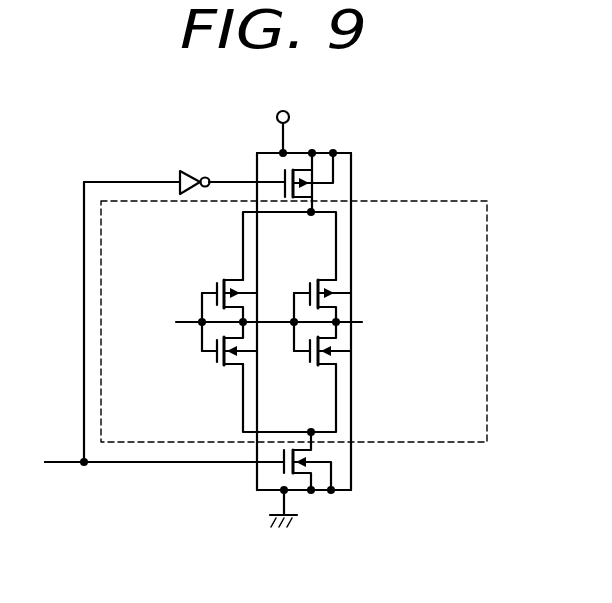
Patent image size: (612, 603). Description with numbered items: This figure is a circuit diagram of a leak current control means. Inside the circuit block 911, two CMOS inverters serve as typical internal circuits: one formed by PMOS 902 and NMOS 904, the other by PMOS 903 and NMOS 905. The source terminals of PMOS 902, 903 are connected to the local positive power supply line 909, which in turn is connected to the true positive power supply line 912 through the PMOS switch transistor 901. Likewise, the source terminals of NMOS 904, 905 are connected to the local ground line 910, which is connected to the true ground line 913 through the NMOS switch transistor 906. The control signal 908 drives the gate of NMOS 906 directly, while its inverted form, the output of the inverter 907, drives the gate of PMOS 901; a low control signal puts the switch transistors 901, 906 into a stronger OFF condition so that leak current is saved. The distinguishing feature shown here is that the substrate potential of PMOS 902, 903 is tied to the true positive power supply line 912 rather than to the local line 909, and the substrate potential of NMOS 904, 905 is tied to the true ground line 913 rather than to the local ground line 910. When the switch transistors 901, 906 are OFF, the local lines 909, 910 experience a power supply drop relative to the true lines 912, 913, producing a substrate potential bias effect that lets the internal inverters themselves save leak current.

The PMOS switch transistor 901 is at (318, 188).
The PMOS transistor 902 is at (212, 287).
The PMOS transistor 903 is at (337, 288).
The NMOS transistor 904 is at (212, 360).
The NMOS transistor 905 is at (338, 347).
The NMOS switch transistor 906 is at (318, 454).
The inverter 907 is at (190, 170).
The control signal 908 is at (215, 462).
The local positive power supply line 909 is at (335, 260).
The local ground line 910 is at (335, 410).
The circuit block 911 is at (453, 201).
The true positive power supply line 912 is at (352, 162).
The true ground line 913 is at (352, 478).